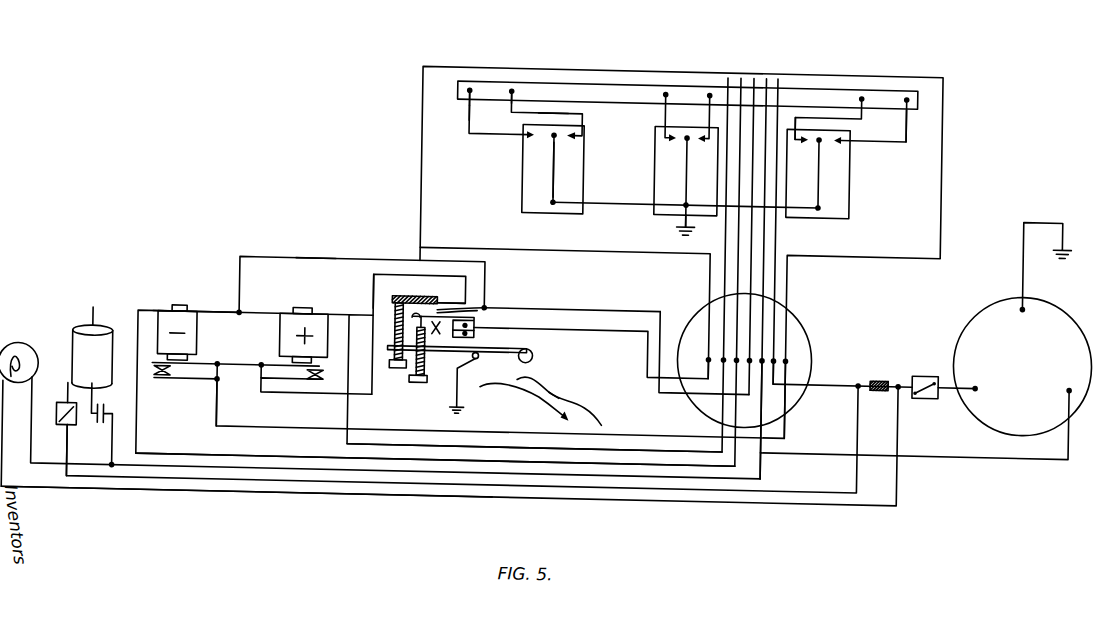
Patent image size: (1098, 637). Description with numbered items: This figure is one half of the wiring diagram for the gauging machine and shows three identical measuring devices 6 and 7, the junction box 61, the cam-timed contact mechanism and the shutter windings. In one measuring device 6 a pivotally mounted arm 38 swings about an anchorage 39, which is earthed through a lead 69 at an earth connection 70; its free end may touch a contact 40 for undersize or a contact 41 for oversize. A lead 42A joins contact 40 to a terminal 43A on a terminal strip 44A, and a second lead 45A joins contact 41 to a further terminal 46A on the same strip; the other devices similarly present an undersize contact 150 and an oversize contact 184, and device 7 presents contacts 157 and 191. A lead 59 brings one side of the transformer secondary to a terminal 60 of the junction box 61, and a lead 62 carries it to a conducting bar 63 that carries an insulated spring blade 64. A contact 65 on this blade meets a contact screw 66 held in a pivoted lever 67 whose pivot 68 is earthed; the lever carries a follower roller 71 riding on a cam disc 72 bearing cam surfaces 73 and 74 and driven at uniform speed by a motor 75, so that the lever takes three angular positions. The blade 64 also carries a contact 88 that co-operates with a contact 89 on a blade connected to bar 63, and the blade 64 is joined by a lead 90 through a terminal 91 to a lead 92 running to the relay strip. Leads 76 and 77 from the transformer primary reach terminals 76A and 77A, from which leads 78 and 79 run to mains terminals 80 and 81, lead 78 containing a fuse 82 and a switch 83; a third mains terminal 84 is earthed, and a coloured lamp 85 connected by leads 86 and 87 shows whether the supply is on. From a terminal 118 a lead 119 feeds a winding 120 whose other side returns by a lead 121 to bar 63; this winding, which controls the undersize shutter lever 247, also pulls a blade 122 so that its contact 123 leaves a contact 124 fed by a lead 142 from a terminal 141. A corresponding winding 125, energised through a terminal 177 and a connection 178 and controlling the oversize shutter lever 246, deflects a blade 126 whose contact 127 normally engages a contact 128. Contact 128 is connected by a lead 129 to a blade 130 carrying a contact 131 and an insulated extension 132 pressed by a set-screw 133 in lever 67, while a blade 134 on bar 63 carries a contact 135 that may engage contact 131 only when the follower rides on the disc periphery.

The measuring device 6 is at (525, 201).
The measuring device 7 is at (852, 186).
The pivotally mounted arm 38 is at (554, 148).
The pivotal anchorage 39 is at (549, 201).
The contact 40 is at (530, 128).
The contact 41 is at (569, 127).
The lead 42A is at (474, 100).
The terminal 43A is at (472, 77).
The terminal strip 44A is at (612, 71).
The second lead 45A is at (562, 100).
The terminal 46A is at (514, 78).
The lead 59 is at (755, 64).
The terminal 60 is at (760, 341).
The junction box 61 is at (782, 344).
The lead 62 is at (665, 378).
The conducting bar 63 is at (479, 312).
The spring blade 64 is at (479, 322).
The contact 65 is at (396, 352).
The contact screw 66 is at (418, 372).
The pivoted lever 67 is at (463, 398).
The pivot 68 is at (483, 350).
The lead 69 is at (635, 191).
The earth connection 70 is at (683, 214).
The follower roller 71 is at (539, 342).
The cam disc 72 is at (598, 392).
The cam surface 73 is at (556, 384).
The cam surface 74 is at (540, 386).
The motor 75 is at (85, 327).
The lead 76 is at (768, 64).
The terminal 76A is at (772, 348).
The lead 77 is at (780, 64).
The terminal 77A is at (770, 342).
The lead 78 is at (852, 366).
The lead 79 is at (844, 436).
The mains terminal 80 is at (983, 366).
The mains terminal 81 is at (1074, 365).
The fuse 82 is at (885, 372).
The switch 83 is at (930, 379).
The third mains terminal 84 is at (1029, 290).
The coloured lamp 85 is at (31, 344).
The lead 86 is at (162, 488).
The lead 87 is at (72, 478).
The contact 88 is at (490, 297).
The contact 89 is at (431, 374).
The lead 90 is at (596, 317).
The terminal 91 is at (711, 341).
The lead 92 is at (424, 176).
The terminal 118 is at (740, 340).
The lead 119 is at (560, 452).
The winding 120 is at (187, 300).
The lead 121 is at (281, 251).
The blade 122 is at (206, 358).
The contact 123 is at (170, 373).
The contact 124 is at (204, 376).
The winding 125 is at (302, 300).
The blade 126 is at (270, 358).
The contact 127 is at (321, 374).
The contact 128 is at (296, 387).
The lead 129 is at (397, 288).
The blade 130 is at (468, 293).
The contact 131 is at (421, 286).
The insulated extension 132 is at (396, 286).
The set-screw 133 is at (417, 306).
The blade 134 is at (484, 296).
The contact 135 is at (437, 318).
The terminal 141 is at (794, 345).
The lead 142 is at (290, 426).
The contact 150 is at (671, 124).
The contact 157 is at (810, 130).
The terminal 177 is at (728, 348).
The connection 178 is at (453, 455).
The contact 184 is at (698, 128).
The contact 191 is at (838, 127).
The lever 246 is at (319, 268).
The lever 247 is at (174, 303).